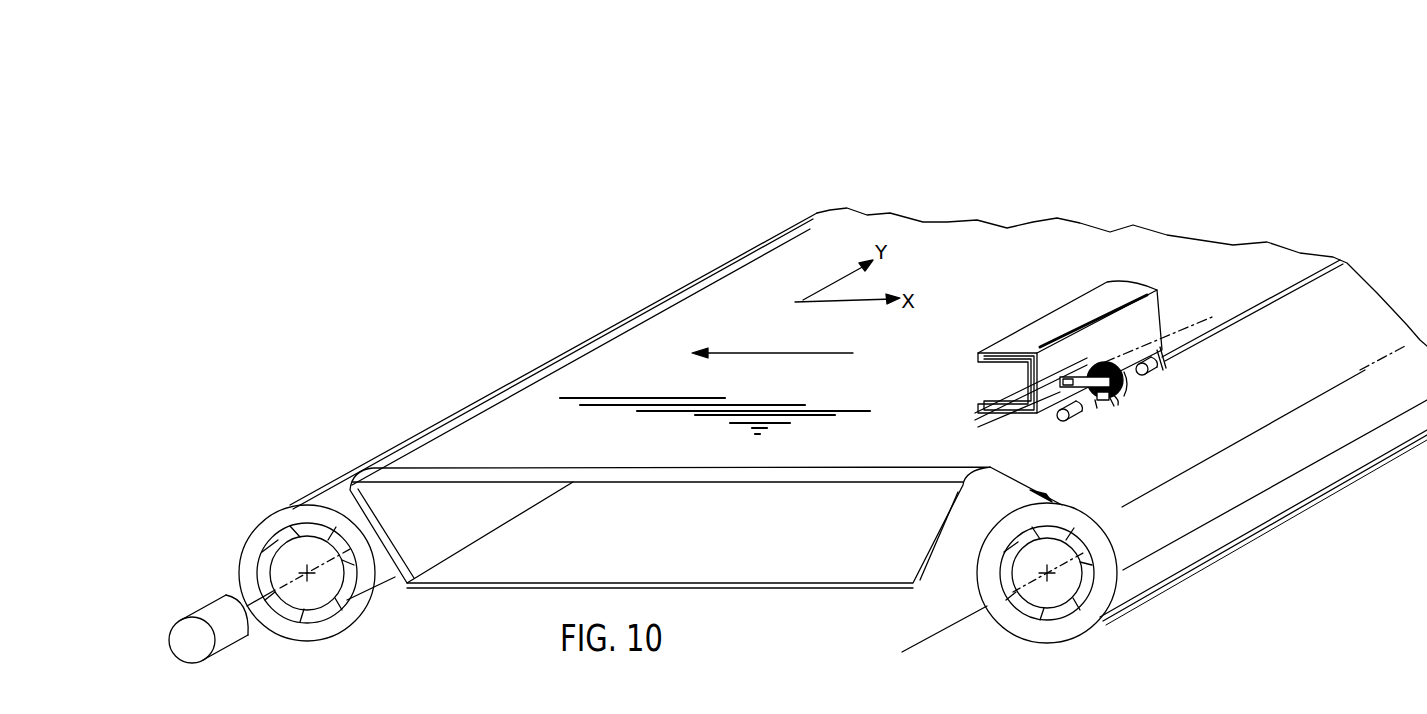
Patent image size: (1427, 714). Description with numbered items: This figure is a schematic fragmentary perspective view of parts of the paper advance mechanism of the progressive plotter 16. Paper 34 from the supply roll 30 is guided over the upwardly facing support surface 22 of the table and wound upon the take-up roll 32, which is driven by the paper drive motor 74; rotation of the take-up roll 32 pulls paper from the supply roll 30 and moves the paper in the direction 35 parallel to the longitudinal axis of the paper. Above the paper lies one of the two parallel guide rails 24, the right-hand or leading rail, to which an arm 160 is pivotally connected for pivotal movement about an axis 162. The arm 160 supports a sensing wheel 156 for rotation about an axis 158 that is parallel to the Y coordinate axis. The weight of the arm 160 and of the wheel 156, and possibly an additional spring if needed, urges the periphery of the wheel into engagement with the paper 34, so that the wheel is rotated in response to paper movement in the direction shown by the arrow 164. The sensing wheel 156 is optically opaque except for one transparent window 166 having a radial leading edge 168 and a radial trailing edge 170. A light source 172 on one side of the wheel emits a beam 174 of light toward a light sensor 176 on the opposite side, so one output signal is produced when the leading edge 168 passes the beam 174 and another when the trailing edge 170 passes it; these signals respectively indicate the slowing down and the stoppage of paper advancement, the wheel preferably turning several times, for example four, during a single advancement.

The progressive plotter 16 is at (661, 278).
The support surface 22 is at (570, 470).
The guide rail 24 is at (1077, 313).
The supply roll 30 is at (1107, 593).
The take-up roll 32 is at (380, 594).
The paper 34 is at (466, 436).
The paper movement direction 35 is at (799, 357).
The paper drive motor 74 is at (229, 638).
The sensing wheel 156 is at (1118, 398).
The axis 158 is at (1026, 424).
The arm 160 is at (1102, 368).
The axis 162 is at (1070, 383).
The arrow 164 is at (1130, 384).
The transparent window 166 is at (1100, 400).
The radial leading edge 168 is at (1096, 403).
The radial trailing edge 170 is at (1112, 400).
The light source 172 is at (1070, 422).
The beam 174 is at (1020, 377).
The light sensor 176 is at (1160, 369).